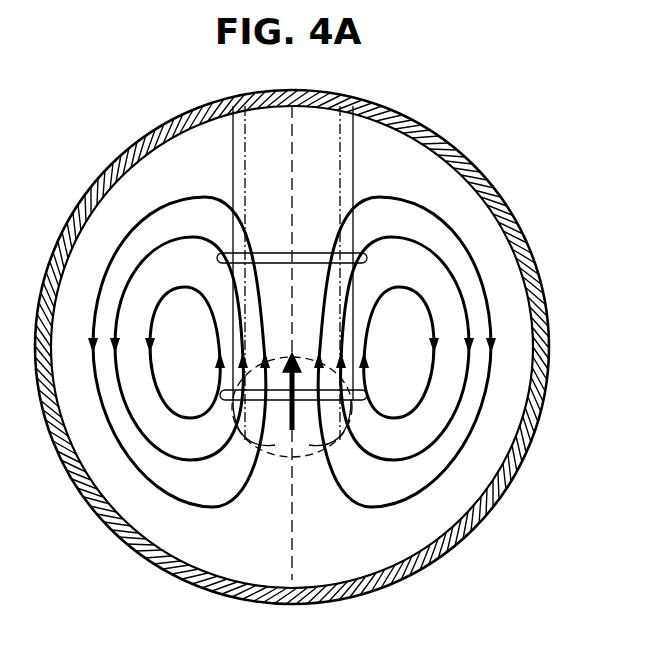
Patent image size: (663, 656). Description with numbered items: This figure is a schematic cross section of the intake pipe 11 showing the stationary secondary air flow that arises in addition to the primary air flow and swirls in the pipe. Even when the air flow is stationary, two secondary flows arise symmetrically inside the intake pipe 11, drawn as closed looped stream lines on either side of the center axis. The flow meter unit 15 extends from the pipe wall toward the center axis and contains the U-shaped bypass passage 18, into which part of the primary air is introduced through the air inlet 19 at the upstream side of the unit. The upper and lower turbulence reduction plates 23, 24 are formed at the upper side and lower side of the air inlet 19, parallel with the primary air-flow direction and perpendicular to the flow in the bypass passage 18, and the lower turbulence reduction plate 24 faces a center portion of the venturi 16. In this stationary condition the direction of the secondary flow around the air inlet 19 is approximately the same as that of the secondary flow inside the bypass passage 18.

The intake pipe 11 is at (462, 148).
The flow meter unit 15 is at (232, 168).
The bypass passage 18 is at (323, 132).
The turbulence reduction plate 23 is at (312, 253).
The air inlet 19 is at (305, 300).
The turbulence reduction plate 24 is at (300, 418).
The venturi 16 is at (285, 425).